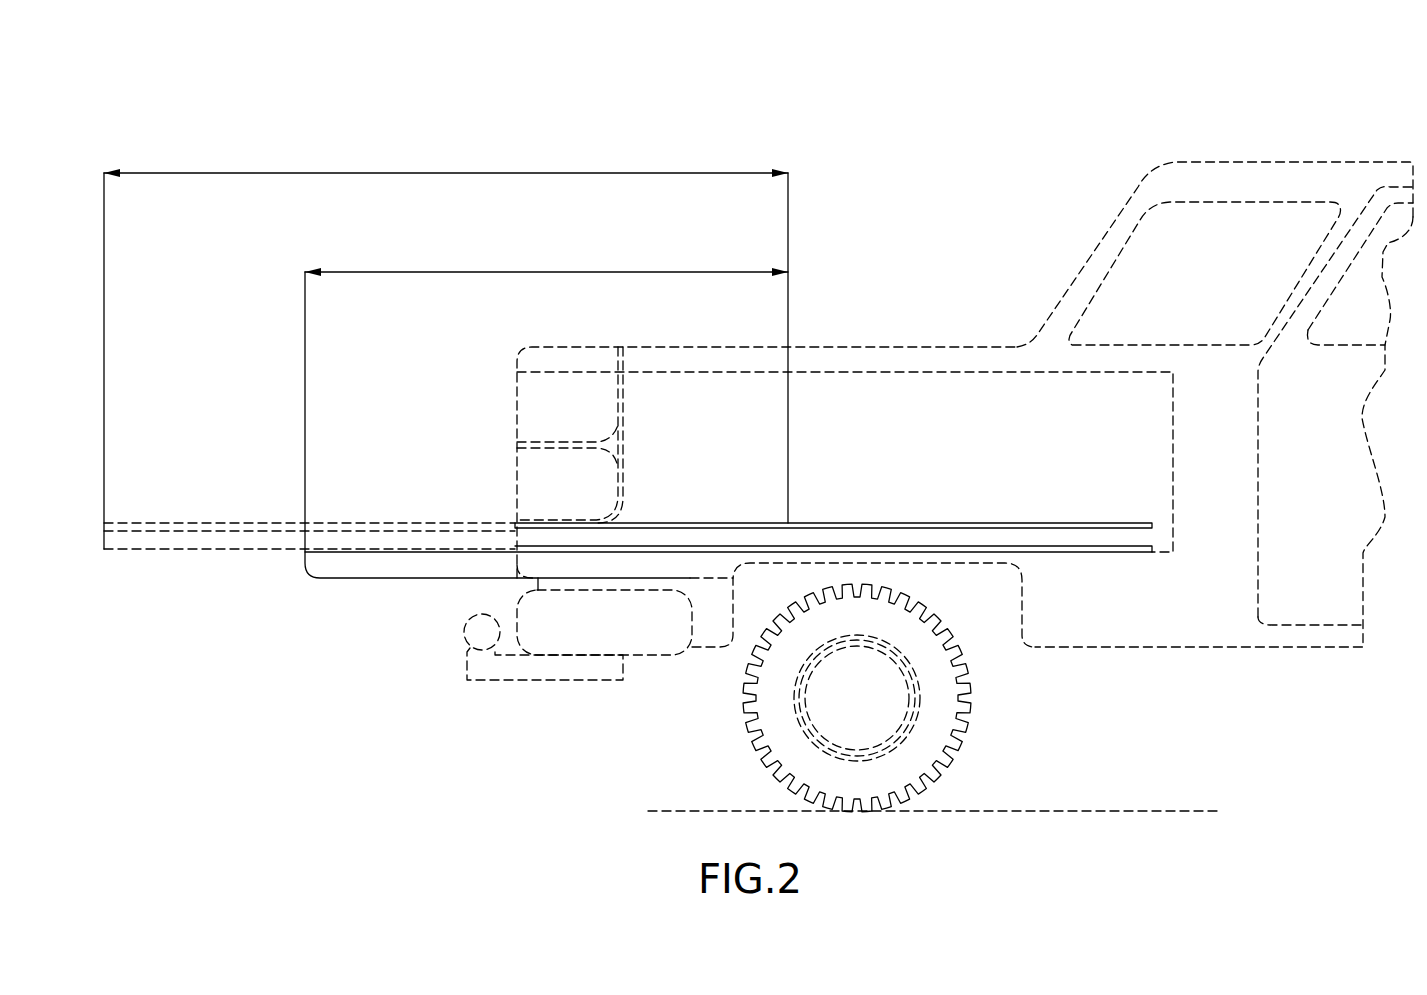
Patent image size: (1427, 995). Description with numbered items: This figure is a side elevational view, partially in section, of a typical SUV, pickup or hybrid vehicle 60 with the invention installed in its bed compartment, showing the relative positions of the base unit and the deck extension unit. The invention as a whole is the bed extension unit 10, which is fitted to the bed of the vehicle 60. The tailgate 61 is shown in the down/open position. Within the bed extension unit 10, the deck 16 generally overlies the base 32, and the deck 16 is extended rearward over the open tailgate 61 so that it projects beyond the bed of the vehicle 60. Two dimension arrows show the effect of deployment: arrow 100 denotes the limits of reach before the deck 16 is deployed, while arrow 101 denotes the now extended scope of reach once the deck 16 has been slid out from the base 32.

The bed extension unit 10 is at (880, 440).
The deck 16 is at (963, 523).
The base 32 is at (1058, 545).
The vehicle 60 is at (1207, 147).
The tailgate 61 is at (348, 563).
The arrow 100 is at (524, 272).
The arrow 101 is at (524, 173).